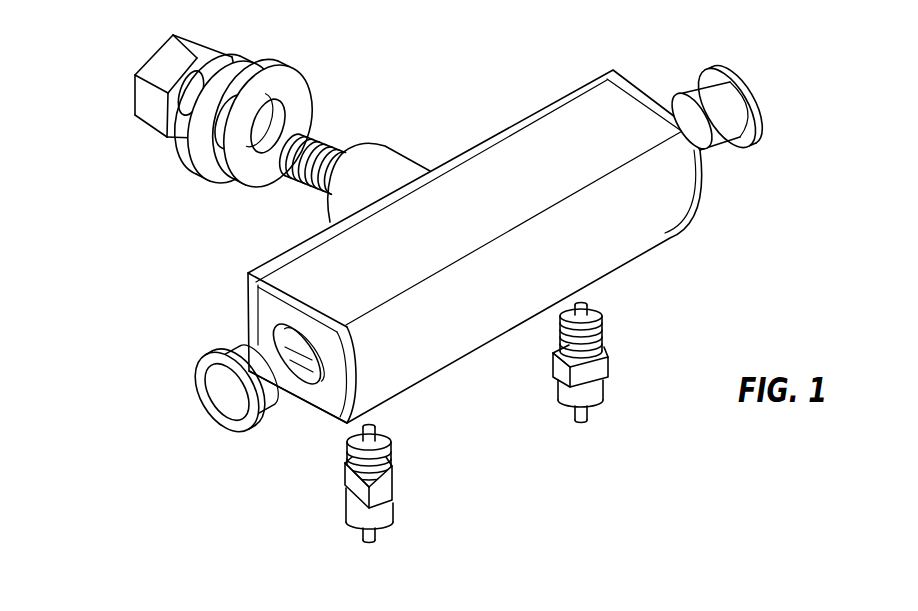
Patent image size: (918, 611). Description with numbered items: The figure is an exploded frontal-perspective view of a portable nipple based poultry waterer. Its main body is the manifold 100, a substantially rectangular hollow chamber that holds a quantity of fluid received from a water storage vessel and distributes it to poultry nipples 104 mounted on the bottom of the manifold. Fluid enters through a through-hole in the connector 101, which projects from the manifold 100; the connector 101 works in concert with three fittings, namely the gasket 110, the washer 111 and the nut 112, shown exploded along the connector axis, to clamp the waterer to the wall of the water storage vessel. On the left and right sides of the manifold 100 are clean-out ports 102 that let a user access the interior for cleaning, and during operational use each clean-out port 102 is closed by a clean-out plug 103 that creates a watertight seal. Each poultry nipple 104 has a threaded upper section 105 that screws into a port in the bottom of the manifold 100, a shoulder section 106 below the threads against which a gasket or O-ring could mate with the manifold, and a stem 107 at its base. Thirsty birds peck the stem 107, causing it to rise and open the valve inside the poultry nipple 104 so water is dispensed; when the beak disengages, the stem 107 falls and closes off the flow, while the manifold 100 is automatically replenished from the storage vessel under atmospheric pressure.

The manifold 100 is at (647, 218).
The connector 101 is at (398, 166).
The clean-out port 102 is at (305, 369).
The clean-out plug 103 is at (757, 95).
The poultry nipple 104 is at (476, 422).
The upper section 105 is at (601, 330).
The shoulder section 106 is at (612, 358).
The stem 107 is at (588, 413).
The gasket 110 is at (240, 184).
The washer 111 is at (203, 160).
The nut 112 is at (131, 96).